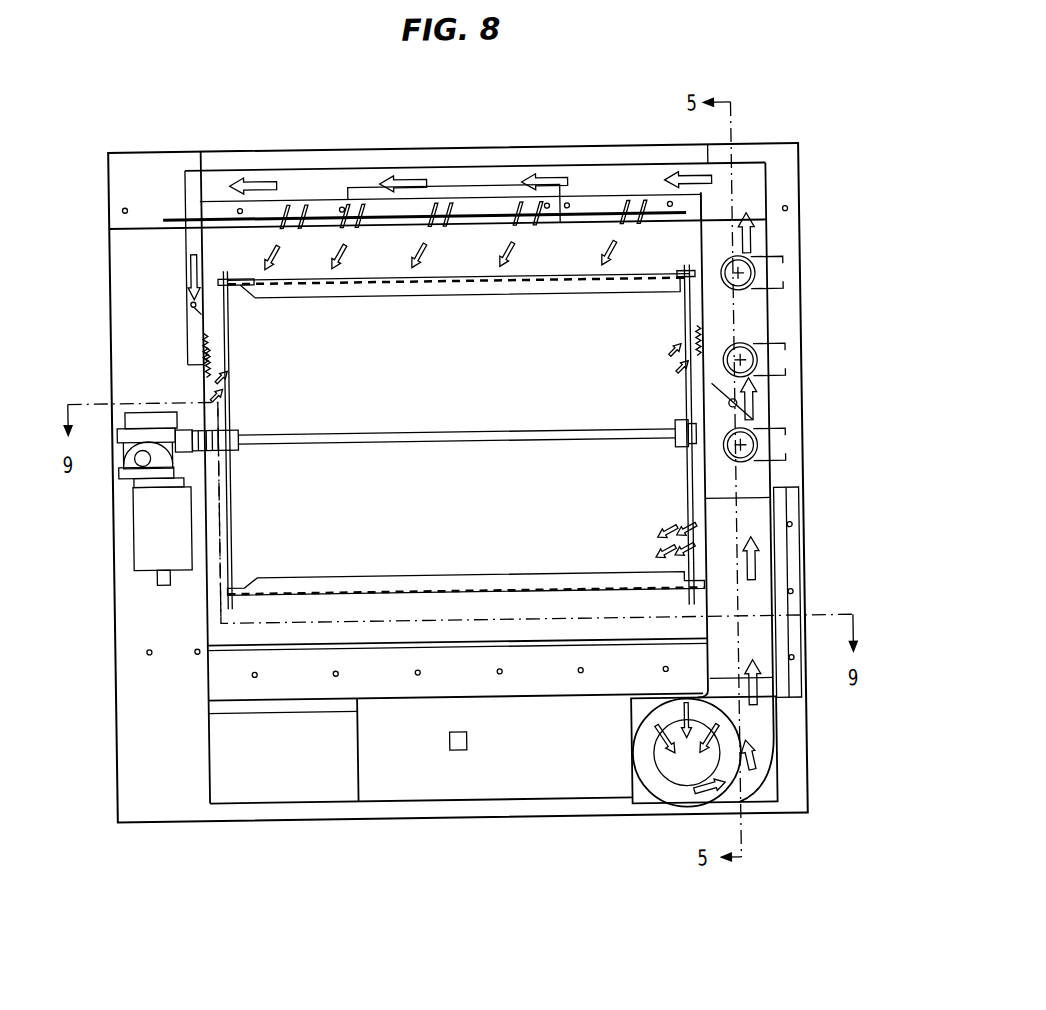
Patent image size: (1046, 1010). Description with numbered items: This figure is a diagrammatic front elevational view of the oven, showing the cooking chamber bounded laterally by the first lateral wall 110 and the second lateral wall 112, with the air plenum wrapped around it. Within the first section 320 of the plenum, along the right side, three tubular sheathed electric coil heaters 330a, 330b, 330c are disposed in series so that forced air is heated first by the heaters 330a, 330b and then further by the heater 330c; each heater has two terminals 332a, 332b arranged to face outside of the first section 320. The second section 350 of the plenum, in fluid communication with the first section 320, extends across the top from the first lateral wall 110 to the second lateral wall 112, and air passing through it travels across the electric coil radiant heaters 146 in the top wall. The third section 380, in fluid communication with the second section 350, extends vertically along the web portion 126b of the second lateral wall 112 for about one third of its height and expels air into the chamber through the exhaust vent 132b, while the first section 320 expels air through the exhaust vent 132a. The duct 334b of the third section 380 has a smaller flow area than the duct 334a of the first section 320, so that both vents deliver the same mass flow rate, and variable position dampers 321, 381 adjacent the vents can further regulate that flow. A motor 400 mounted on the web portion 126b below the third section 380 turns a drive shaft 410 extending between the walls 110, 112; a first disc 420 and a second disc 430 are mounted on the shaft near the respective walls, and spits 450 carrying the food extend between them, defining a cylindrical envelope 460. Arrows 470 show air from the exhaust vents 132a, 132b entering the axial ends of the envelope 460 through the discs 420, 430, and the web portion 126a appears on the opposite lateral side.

The electric coil radiant heaters 146 is at (317, 216).
The second section of the air plenum 350 is at (614, 182).
The duct in the first section 334a is at (720, 250).
The duct in the third section 334b is at (198, 241).
The third section of the air plenum 380 is at (197, 325).
The damper 381 is at (194, 298).
The third heater 330c is at (748, 294).
The first section of the air plenum 320 is at (755, 322).
The second heater 330b is at (750, 381).
The heater terminal 332a is at (786, 433).
The heater terminal 332b is at (786, 462).
The first heater 330a is at (750, 466).
The web portion 126b is at (230, 320).
The second exhaust vent 132b is at (215, 350).
The arrows 470 is at (232, 390).
The cylindrical envelope 460 is at (565, 395).
The first exhaust vent 132a is at (698, 338).
The damper 321 is at (714, 389).
The first disc 420 is at (687, 410).
The drive shaft 410 is at (270, 441).
The second disc 430 is at (231, 506).
The second lateral wall 112 is at (222, 530).
The spits 450 is at (322, 576).
The web portion 126a is at (688, 490).
The first lateral wall 110 is at (688, 528).
The motor 400 is at (112, 525).